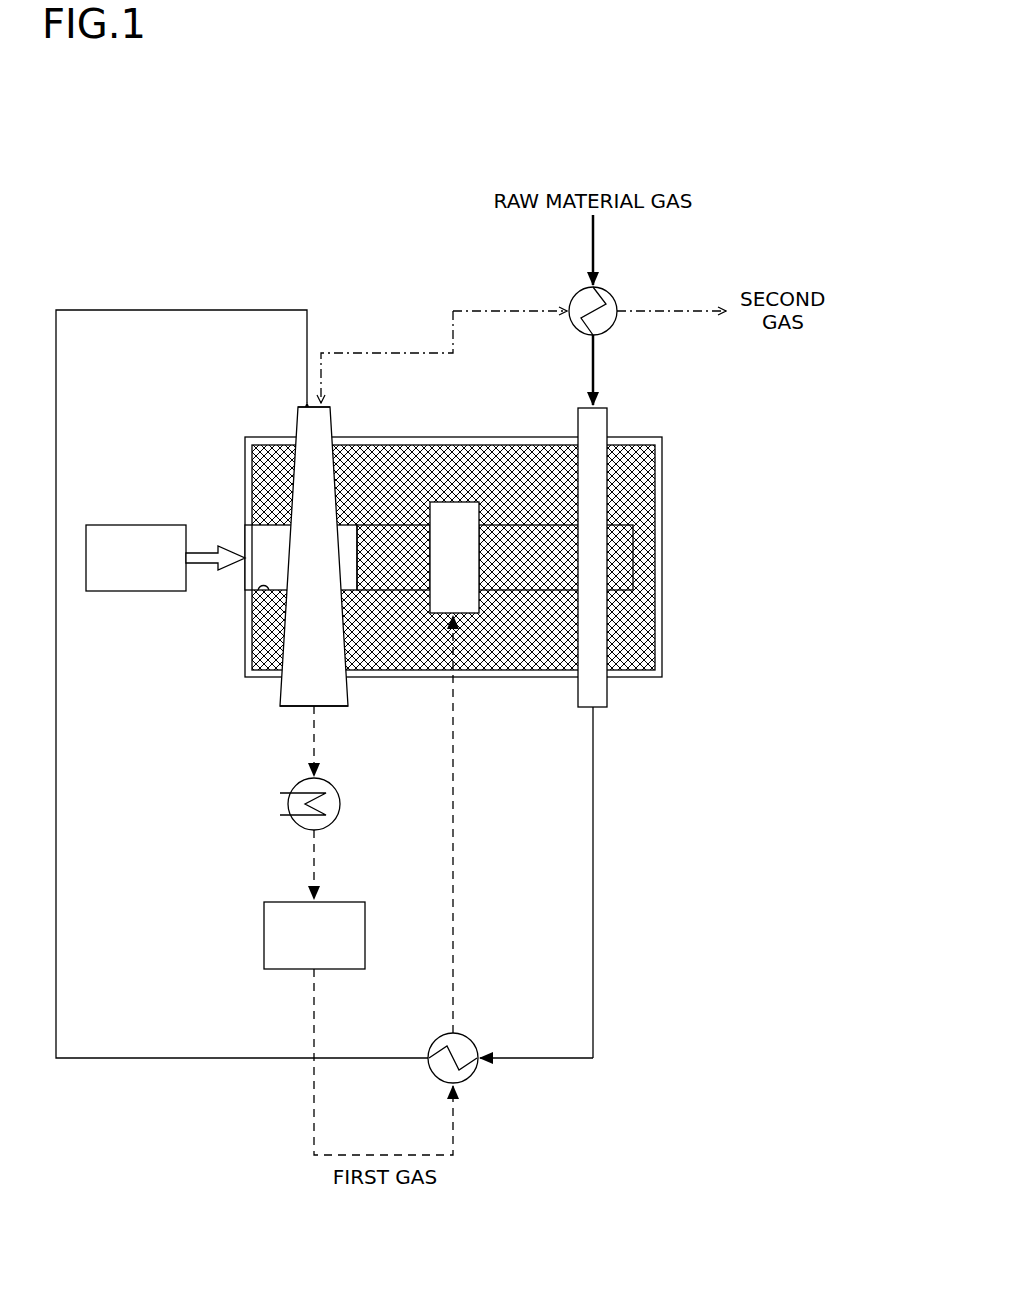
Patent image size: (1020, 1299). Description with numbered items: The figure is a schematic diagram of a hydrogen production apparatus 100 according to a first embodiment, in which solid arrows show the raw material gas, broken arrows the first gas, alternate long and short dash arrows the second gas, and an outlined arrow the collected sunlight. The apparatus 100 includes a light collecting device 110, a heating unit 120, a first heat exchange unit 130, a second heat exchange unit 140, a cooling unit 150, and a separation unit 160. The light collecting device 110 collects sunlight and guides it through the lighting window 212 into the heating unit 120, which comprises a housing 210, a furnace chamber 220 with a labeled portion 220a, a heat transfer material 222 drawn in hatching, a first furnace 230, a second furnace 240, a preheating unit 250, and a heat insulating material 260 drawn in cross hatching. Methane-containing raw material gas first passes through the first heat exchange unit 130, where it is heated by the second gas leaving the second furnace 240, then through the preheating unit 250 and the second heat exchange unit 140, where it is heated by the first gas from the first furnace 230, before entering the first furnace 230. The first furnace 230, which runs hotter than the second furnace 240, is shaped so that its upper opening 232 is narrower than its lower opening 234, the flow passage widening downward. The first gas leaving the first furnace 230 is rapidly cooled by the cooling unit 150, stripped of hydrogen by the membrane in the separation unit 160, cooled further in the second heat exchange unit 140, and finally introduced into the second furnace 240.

The hydrogen production apparatus 100 is at (143, 105).
The light collecting device 110 is at (108, 524).
The heating unit 120 is at (673, 404).
The first heat exchange unit 130 is at (610, 298).
The second heat exchange unit 140 is at (470, 1037).
The cooling unit 150 is at (360, 772).
The separation unit 160 is at (350, 901).
The housing 210 is at (375, 436).
The lighting window 212 is at (245, 538).
The furnace chamber 220 is at (258, 576).
The light receiving surface 220a is at (263, 590).
The heat transfer material 222 is at (368, 566).
The first furnace 230 is at (280, 694).
The upper opening 232 is at (298, 410).
The lower opening 234 is at (340, 708).
The second furnace 240 is at (433, 566).
The preheating unit 250 is at (607, 692).
The heat insulating material 260 is at (516, 638).